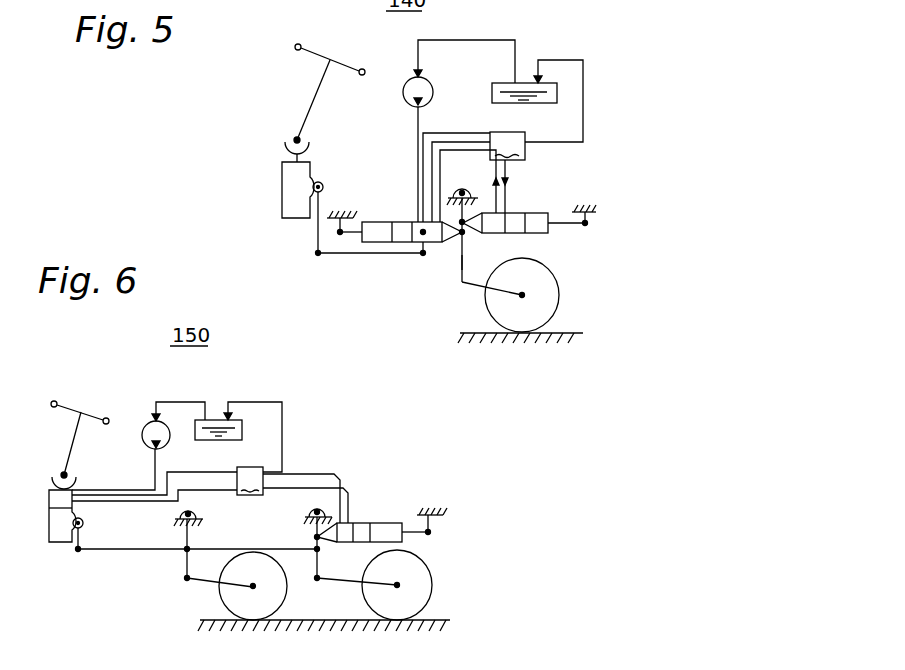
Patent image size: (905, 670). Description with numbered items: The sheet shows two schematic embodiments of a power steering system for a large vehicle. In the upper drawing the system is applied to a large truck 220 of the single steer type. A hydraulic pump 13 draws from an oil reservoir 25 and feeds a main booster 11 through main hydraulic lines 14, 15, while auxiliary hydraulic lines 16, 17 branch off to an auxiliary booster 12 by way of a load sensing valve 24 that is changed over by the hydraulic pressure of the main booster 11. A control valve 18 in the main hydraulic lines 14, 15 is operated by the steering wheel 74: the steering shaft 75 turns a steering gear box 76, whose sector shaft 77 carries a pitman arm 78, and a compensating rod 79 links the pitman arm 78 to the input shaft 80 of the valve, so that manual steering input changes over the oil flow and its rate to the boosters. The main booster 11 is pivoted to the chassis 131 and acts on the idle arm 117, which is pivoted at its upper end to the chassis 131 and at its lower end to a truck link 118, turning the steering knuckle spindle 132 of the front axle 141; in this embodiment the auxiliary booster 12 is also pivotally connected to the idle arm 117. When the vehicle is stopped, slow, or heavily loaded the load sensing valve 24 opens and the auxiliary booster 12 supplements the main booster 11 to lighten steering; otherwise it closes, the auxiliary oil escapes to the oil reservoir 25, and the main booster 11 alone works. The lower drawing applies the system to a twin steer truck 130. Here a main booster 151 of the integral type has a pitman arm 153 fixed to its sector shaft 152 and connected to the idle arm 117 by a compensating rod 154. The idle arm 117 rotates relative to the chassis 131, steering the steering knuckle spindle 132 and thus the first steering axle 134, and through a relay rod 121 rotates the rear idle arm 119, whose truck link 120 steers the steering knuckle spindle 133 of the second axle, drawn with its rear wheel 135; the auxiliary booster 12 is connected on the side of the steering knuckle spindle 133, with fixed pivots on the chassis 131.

In FIG. 5, the main booster 11 is at (387, 221).
In FIG. 5, the auxiliary booster 12 is at (527, 212).
In FIG. 6, the auxiliary booster 12 is at (365, 521).
In FIG. 5, the hydraulic pump 13 is at (435, 83).
In FIG. 6, the hydraulic pump 13 is at (146, 423).
In FIG. 5, the main hydraulic line 14 is at (415, 143).
In FIG. 6, the main hydraulic line 14 is at (147, 464).
In FIG. 5, the main hydraulic line 15 is at (425, 133).
In FIG. 6, the main hydraulic line 15 is at (284, 410).
In FIG. 5, the auxiliary hydraulic line 16 is at (434, 142).
In FIG. 6, the auxiliary hydraulic line 16 is at (187, 473).
In FIG. 5, the auxiliary hydraulic line 17 is at (445, 150).
In FIG. 6, the auxiliary hydraulic line 17 is at (206, 491).
In FIG. 5, the control valve 18 is at (432, 244).
In FIG. 6, the control valve 18 is at (53, 492).
In FIG. 5, the load sensing valve 24 is at (536, 110).
In FIG. 6, the load sensing valve 24 is at (250, 481).
In FIG. 5, the oil reservoir 25 is at (552, 103).
In FIG. 6, the oil reservoir 25 is at (242, 431).
In FIG. 5, the steering wheel 74 is at (327, 56).
In FIG. 6, the steering wheel 74 is at (79, 410).
In FIG. 5, the steering shaft 75 is at (311, 108).
In FIG. 6, the steering shaft 75 is at (72, 446).
In FIG. 5, the steering gear box 76 is at (282, 204).
In FIG. 5, the sector shaft 77 is at (316, 176).
In FIG. 5, the pitman arm 78 is at (318, 245).
In FIG. 5, the compensating rod 79 is at (356, 257).
In FIG. 5, the input shaft 80 is at (420, 248).
In FIG. 5, the idle arm 117 is at (462, 256).
In FIG. 6, the idle arm 117 is at (188, 533).
In FIG. 5, the truck link 118 is at (462, 284).
In FIG. 6, the truck link 118 is at (207, 580).
In FIG. 6, the idle arm 119 is at (319, 582).
In FIG. 6, the truck link 120 is at (369, 580).
In FIG. 6, the relay rod 121 is at (310, 546).
In FIG. 6, the truck 130 is at (408, 497).
In FIG. 5, the chassis 131 is at (341, 204).
In FIG. 6, the chassis 131 is at (441, 512).
In FIG. 5, the steering knuckle spindle 132 is at (522, 293).
In FIG. 6, the steering knuckle spindle 132 is at (258, 578).
In FIG. 6, the steering knuckle spindle 133 is at (399, 584).
In FIG. 6, the first steering axle 134 is at (288, 622).
In FIG. 6, the wheel 135 is at (432, 588).
In FIG. 5, the front axle 141 is at (560, 293).
In FIG. 6, the main booster 151 is at (52, 521).
In FIG. 6, the sector shaft 152 is at (82, 523).
In FIG. 6, the pitman arm 153 is at (78, 551).
In FIG. 6, the compensating rod 154 is at (133, 551).
In FIG. 5, the large truck 220 is at (601, 195).